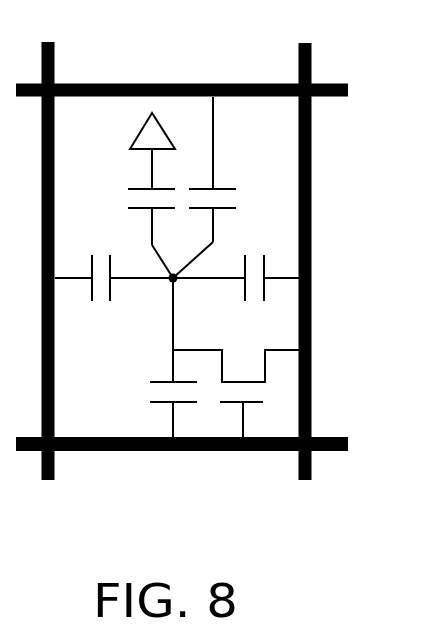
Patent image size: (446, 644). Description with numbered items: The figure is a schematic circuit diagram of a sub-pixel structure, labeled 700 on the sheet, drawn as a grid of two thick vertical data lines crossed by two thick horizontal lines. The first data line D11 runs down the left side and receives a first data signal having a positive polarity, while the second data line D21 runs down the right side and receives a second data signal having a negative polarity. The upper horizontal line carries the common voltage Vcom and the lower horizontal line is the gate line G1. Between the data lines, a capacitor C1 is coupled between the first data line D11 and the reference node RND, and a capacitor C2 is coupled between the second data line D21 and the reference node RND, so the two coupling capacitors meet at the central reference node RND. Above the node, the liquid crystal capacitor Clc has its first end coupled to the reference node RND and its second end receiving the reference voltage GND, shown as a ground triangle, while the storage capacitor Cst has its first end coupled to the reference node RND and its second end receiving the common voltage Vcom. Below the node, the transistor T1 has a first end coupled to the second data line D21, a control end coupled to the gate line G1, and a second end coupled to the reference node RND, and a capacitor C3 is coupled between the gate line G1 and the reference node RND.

The first data line D11 is at (47, 243).
The second data line D21 is at (309, 243).
The common voltage Vcom is at (215, 92).
The gate line G1 is at (200, 444).
The reference voltage GND is at (131, 148).
The liquid crystal capacitor Clc is at (132, 231).
The storage capacitor Cst is at (227, 187).
The capacitor C1 is at (114, 297).
The capacitor C2 is at (236, 297).
The capacitor C3 is at (157, 395).
The reference node RND is at (170, 282).
The transistor T1 is at (236, 386).
The pixel circuit 700 is at (432, 523).